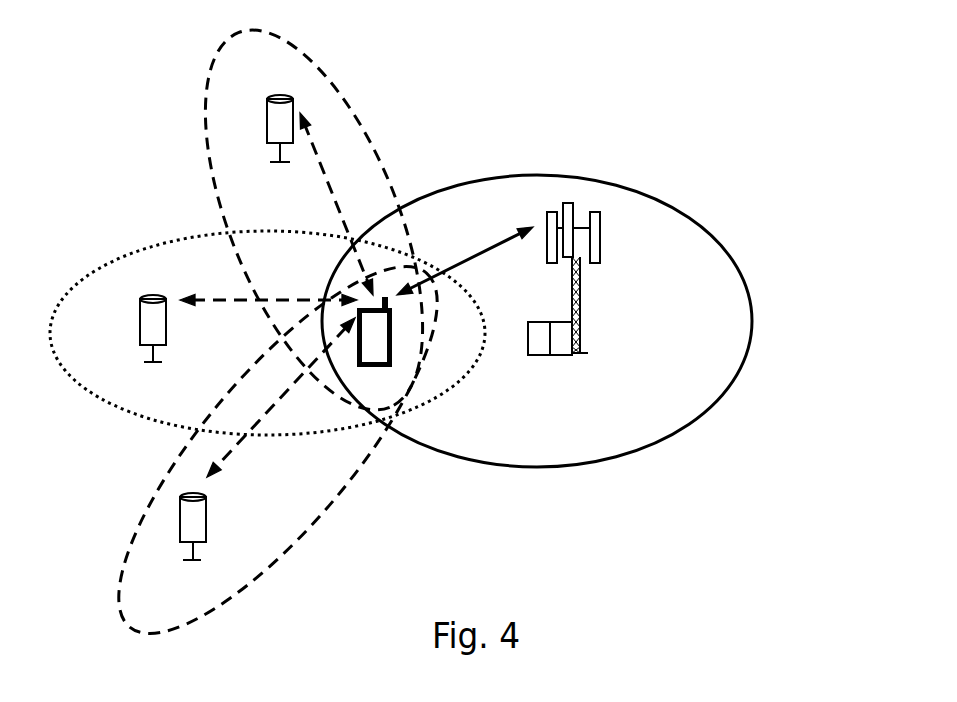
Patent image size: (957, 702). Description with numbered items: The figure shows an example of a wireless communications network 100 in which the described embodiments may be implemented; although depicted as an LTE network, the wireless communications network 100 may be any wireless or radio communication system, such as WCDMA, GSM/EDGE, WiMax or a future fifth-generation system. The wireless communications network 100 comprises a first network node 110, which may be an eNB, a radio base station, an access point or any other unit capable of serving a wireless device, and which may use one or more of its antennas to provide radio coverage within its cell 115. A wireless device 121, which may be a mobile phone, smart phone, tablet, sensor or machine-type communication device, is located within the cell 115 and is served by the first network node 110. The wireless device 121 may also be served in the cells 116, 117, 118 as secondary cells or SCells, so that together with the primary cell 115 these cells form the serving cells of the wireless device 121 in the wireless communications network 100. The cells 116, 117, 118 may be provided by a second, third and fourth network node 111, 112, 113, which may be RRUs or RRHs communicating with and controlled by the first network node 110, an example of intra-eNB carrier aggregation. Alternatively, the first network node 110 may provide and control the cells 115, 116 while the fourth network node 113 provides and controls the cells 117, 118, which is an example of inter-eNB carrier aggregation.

The wireless communications network 100 is at (812, 119).
The first network node 110 is at (603, 238).
The second network node 111 is at (267, 125).
The third network node 112 is at (140, 342).
The fourth network node 113 is at (207, 527).
The cell 115 is at (520, 468).
The cell 116 is at (388, 170).
The cell 117 is at (83, 392).
The cell 118 is at (302, 541).
The wireless device 121 is at (397, 373).